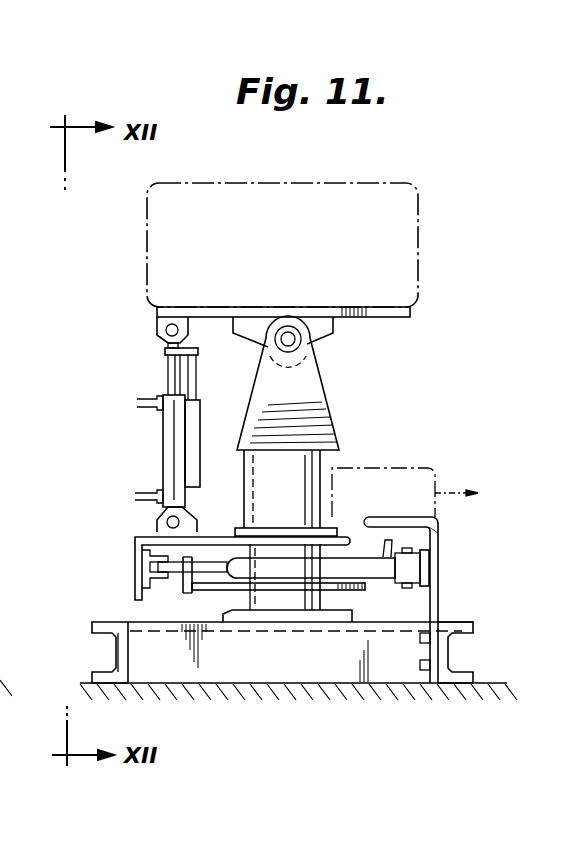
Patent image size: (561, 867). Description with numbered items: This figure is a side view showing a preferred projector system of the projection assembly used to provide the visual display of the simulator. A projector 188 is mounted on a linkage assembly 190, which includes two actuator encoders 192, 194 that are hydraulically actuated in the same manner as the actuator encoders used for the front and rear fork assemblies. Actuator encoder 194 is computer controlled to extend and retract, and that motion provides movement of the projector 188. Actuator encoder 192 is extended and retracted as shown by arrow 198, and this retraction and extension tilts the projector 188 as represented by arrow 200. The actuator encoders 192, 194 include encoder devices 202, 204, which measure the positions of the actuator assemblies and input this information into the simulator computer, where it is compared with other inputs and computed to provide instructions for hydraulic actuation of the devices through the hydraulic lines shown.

The projector 188 is at (362, 185).
The linkage assembly 190 is at (355, 408).
The actuator encoder 192 is at (168, 398).
The actuator encoder 194 is at (383, 598).
The arrow 198 is at (147, 420).
The arrow 200 is at (478, 415).
The encoder device 202 is at (287, 598).
The encoder device 204 is at (197, 418).